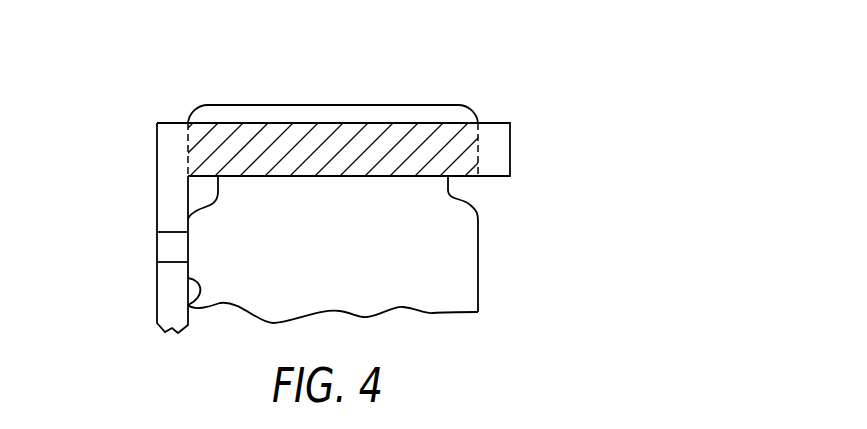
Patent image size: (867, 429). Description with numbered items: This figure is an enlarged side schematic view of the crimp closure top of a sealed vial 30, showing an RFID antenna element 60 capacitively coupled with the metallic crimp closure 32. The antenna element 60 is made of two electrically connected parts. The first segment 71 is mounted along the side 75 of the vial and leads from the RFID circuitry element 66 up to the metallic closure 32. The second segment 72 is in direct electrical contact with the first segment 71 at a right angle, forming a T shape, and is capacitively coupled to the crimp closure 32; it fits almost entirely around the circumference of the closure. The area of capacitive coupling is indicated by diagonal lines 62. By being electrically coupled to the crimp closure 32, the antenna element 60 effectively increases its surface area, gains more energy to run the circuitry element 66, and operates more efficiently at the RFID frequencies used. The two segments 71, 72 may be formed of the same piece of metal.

The sealed vial 30 is at (590, 152).
The metallic crimp closure 32 is at (455, 105).
The RFID antenna element 60 is at (152, 193).
The diagonal lines 62 is at (338, 123).
The RFID circuitry element 66 is at (157, 248).
The first segment 71 is at (172, 217).
The second segment 72 is at (268, 123).
The side of the vial 75 is at (187, 304).